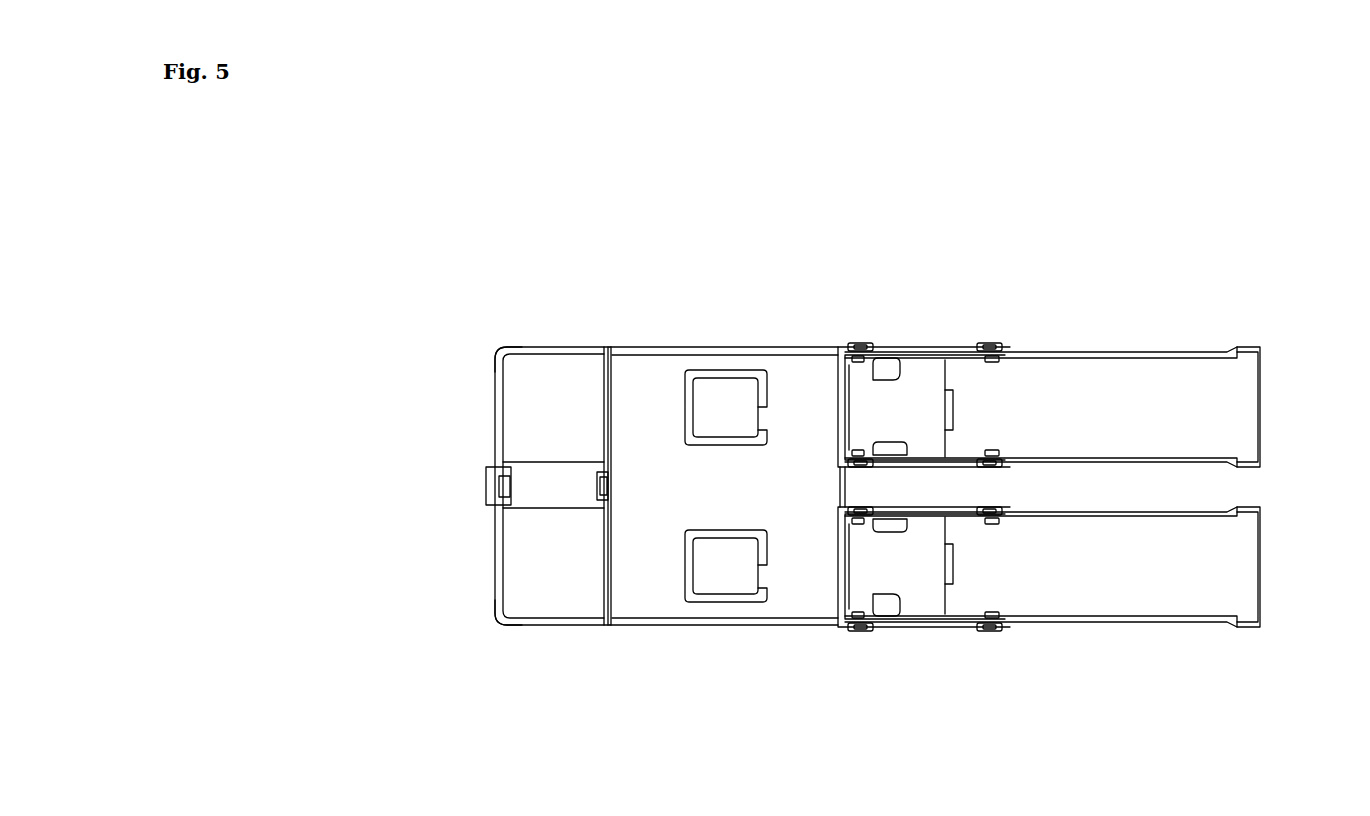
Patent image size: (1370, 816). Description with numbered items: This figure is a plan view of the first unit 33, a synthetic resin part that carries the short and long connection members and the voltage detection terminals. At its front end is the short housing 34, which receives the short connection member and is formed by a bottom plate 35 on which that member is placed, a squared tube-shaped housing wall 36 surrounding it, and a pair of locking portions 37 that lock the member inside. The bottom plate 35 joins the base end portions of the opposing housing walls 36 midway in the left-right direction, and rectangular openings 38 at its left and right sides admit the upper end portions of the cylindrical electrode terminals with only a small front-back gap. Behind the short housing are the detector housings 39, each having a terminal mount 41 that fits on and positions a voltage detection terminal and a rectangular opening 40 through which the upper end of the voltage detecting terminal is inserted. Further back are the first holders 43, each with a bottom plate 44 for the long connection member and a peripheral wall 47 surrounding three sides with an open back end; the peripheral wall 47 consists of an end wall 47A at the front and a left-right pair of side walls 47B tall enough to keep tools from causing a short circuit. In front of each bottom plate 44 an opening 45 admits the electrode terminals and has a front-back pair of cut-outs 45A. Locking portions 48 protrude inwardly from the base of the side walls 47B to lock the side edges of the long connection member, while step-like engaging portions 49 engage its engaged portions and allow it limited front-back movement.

The first unit 33 is at (1050, 239).
The short housing 34 is at (583, 314).
The bottom plate 35 is at (530, 473).
The housing wall 36 is at (607, 600).
The locking portion 37 is at (500, 490).
The opening 38 is at (533, 353).
The detector housing 39 is at (746, 344).
The opening 40 is at (718, 392).
The terminal mount 41 is at (700, 405).
The first holder 43 is at (1099, 292).
The bottom plate 44 is at (1237, 403).
The opening 45 is at (943, 430).
The cut-out 45A is at (953, 393).
The peripheral wall 47 is at (1112, 620).
The end wall 47A is at (838, 400).
The side wall 47B is at (1147, 352).
The locking portion 48 is at (842, 357).
The engaging portion 49 is at (898, 380).